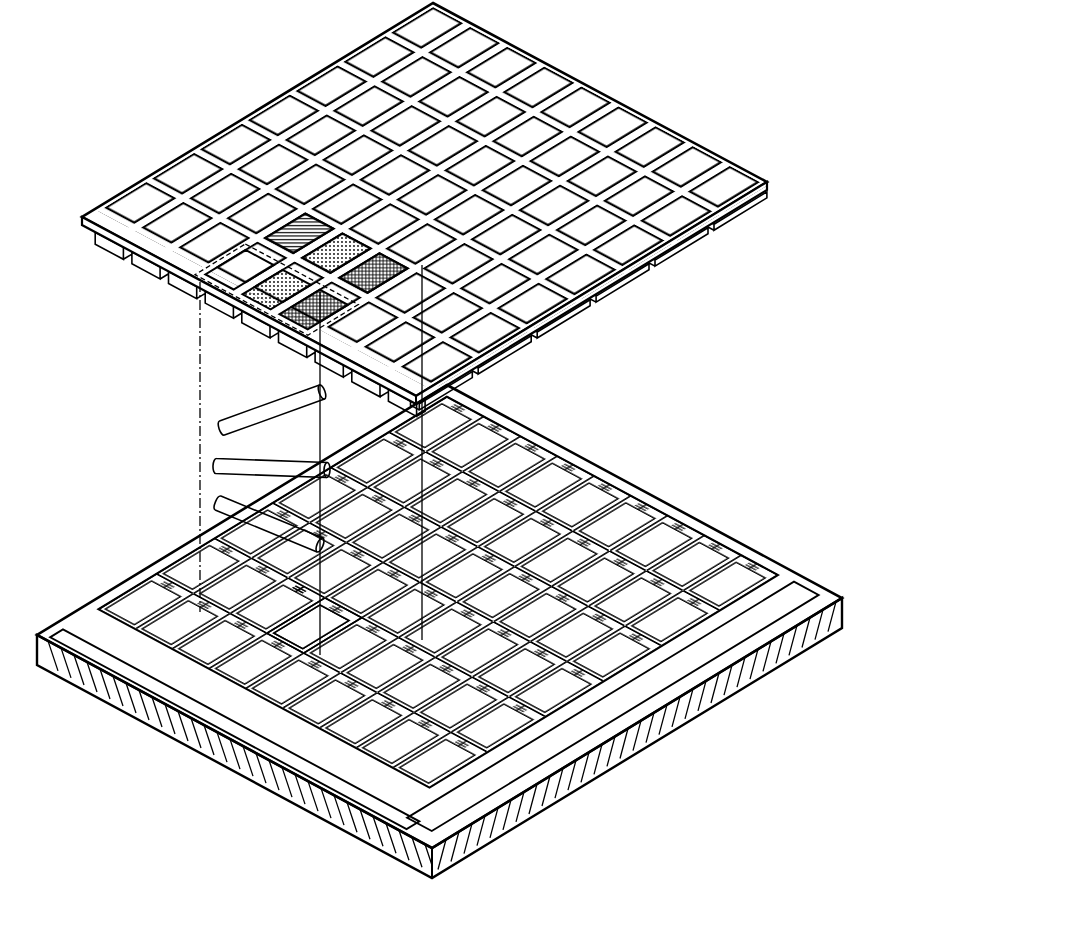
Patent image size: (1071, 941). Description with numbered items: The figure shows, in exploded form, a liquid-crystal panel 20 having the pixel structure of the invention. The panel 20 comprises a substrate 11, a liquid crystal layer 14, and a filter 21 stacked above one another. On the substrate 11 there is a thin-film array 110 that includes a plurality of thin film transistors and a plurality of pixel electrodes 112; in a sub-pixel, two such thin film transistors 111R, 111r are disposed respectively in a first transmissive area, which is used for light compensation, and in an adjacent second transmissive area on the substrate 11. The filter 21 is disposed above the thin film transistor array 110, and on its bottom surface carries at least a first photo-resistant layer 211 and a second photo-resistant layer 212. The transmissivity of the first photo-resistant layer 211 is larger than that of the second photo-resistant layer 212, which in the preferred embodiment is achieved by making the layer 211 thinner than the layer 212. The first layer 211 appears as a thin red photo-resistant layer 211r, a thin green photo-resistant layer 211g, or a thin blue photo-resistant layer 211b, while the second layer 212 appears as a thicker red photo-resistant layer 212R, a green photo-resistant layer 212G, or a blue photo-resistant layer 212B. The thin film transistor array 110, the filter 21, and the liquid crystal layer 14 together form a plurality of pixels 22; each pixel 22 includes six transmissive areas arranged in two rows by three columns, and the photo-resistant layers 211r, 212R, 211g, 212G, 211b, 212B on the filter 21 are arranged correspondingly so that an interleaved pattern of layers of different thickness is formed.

The liquid-crystal panel 20 is at (686, 67).
The filter 21 is at (772, 184).
The pixel 22 is at (266, 4).
The first photo-resistant layer 211 is at (515, 352).
The second photo-resistant layer 212 is at (460, 388).
The thin red photo-resistant layer 211r is at (285, 226).
The thin green photo-resistant layer 211g is at (328, 246).
The thin blue photo-resistant layer 211b is at (372, 265).
The red photo-resistant layer 212R is at (222, 266).
The green photo-resistant layer 212G is at (262, 282).
The blue photo-resistant layer 212B is at (302, 300).
The substrate 11 is at (843, 613).
The thin-film array 110 is at (712, 540).
The thin film transistor 111R is at (280, 640).
The thin film transistor 111r is at (318, 660).
The pixel electrode 112 is at (296, 594).
The liquid crystal layer 14 is at (214, 508).